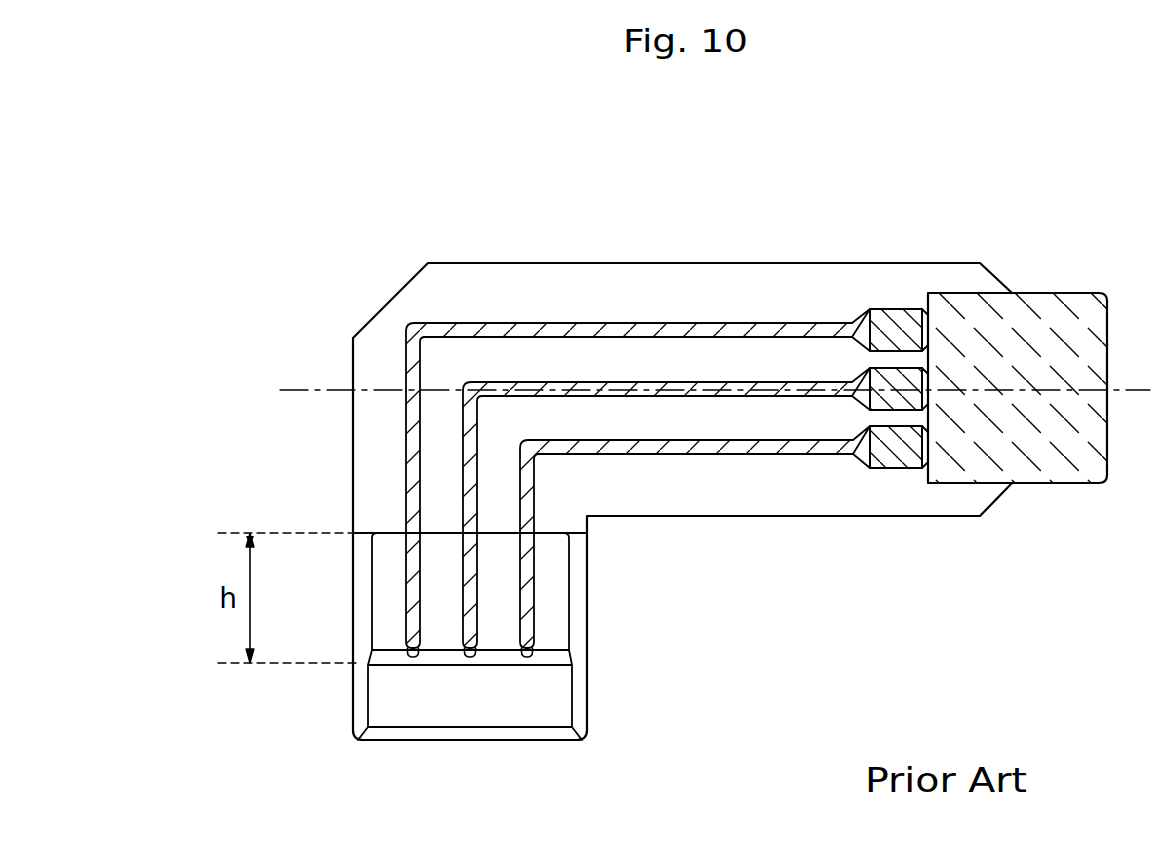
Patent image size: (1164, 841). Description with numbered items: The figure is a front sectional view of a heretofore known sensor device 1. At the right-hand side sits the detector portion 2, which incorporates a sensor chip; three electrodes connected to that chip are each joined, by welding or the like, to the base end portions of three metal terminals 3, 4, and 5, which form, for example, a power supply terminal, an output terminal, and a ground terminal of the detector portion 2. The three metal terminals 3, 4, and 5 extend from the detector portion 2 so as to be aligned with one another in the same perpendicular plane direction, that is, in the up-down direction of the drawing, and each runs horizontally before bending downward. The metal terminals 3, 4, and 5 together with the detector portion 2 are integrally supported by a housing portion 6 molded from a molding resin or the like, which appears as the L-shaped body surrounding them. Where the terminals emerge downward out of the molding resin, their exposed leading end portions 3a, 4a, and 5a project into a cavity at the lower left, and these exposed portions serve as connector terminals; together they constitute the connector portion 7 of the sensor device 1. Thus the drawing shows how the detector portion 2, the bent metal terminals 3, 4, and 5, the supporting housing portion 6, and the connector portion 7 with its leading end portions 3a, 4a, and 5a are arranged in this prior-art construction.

The sensor device 1 is at (955, 678).
The detector portion 2 is at (1072, 310).
The metal terminal 3 is at (753, 453).
The leading end portion 3a is at (537, 597).
The metal terminal 4 is at (607, 388).
The leading end portion 4a is at (484, 581).
The metal terminal 5 is at (527, 330).
The leading end portion 5a is at (407, 597).
The housing portion 6 is at (753, 516).
The connector portion 7 is at (588, 567).